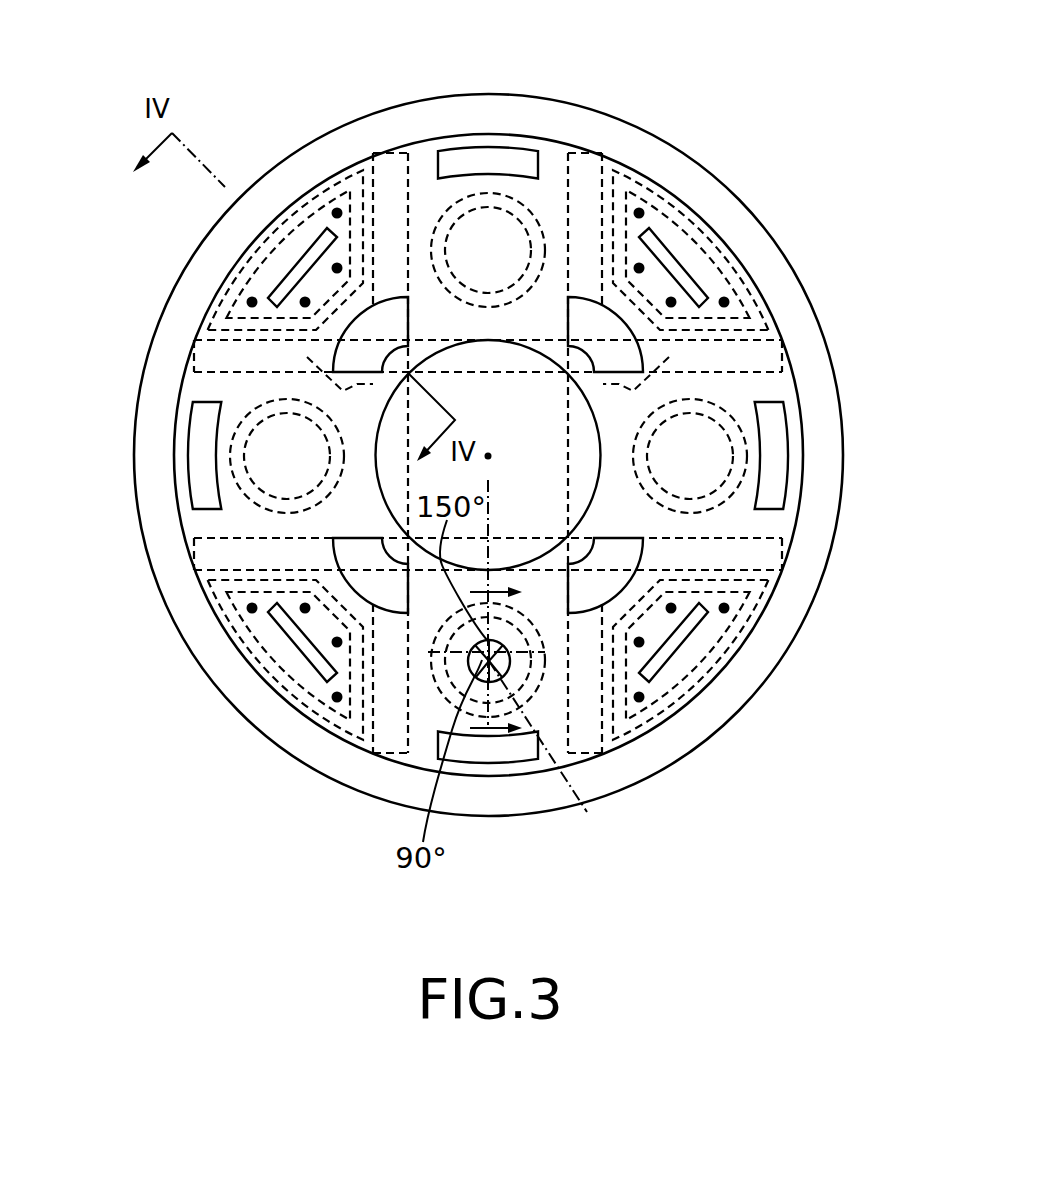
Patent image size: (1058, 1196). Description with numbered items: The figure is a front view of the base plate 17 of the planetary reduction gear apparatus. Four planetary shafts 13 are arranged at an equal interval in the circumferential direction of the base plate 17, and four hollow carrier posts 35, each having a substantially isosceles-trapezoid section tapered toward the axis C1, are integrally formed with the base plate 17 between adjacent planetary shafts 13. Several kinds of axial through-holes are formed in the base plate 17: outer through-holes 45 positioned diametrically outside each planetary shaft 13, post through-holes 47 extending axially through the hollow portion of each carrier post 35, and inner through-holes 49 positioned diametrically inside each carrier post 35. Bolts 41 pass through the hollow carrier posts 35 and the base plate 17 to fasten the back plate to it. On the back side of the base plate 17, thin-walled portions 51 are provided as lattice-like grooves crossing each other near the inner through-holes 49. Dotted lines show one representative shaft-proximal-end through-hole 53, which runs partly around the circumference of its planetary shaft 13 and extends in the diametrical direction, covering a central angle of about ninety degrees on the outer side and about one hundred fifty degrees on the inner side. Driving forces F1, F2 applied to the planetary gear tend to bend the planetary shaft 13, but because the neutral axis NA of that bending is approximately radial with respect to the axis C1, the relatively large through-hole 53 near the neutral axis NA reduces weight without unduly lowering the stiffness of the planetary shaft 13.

The planetary shaft 13 is at (440, 212).
The base plate 17 is at (552, 162).
The carrier post 35 is at (215, 313).
The bolt 41 is at (728, 607).
The outer through-hole 45 is at (487, 155).
The post through-hole 47 is at (306, 262).
The inner through-hole 49 is at (388, 328).
The thin-walled portion 51 is at (488, 390).
The shaft-proximal-end through-hole 53 is at (522, 657).
The axis of the input shaft C1 is at (488, 455).
The neutral axis NA is at (489, 512).
The driving force F1 is at (490, 592).
The driving force F2 is at (493, 730).